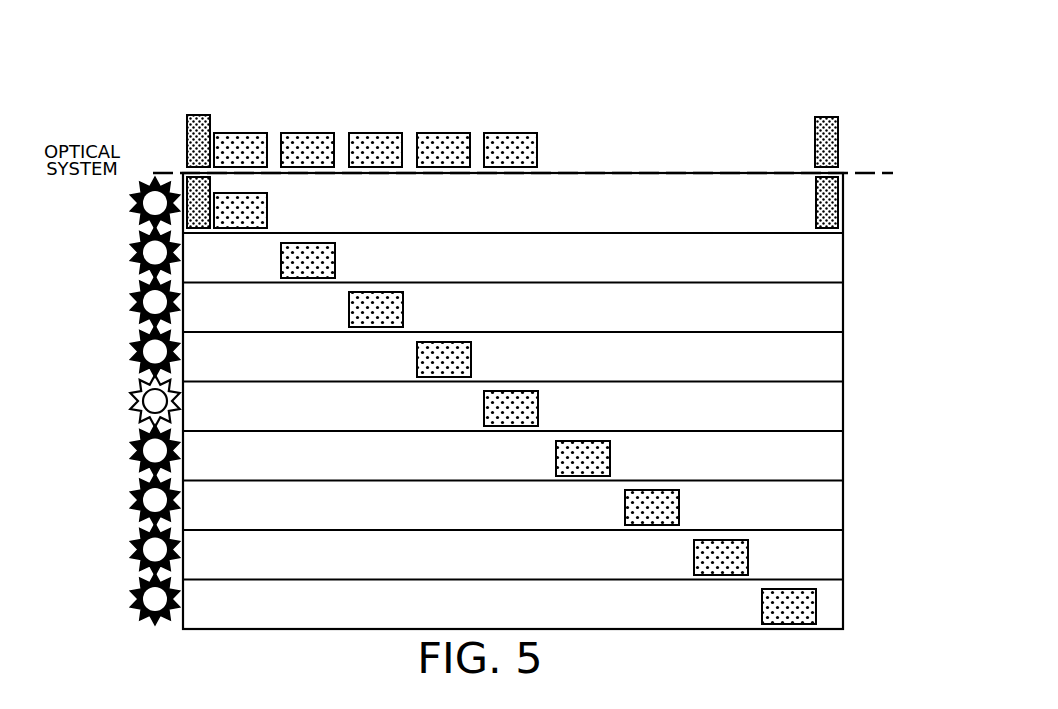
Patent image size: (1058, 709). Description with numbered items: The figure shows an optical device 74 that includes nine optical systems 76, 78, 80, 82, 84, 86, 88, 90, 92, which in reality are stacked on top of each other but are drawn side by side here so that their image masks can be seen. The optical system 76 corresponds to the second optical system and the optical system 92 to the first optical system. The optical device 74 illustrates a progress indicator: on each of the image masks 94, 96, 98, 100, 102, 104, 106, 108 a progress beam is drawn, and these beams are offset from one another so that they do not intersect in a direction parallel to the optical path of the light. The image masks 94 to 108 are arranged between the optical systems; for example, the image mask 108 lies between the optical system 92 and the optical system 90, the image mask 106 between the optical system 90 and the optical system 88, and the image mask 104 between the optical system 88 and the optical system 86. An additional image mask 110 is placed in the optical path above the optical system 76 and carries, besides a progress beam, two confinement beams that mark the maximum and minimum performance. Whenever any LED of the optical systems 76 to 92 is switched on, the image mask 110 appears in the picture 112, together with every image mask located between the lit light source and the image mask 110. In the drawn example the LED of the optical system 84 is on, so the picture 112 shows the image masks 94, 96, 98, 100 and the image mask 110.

The optical device 74 is at (158, 101).
The optical system 76 is at (120, 200).
The optical system 78 is at (120, 250).
The optical system 80 is at (120, 299).
The optical system 82 is at (120, 348).
The optical system 84 is at (120, 398).
The optical system 86 is at (120, 448).
The optical system 88 is at (120, 497).
The optical system 90 is at (120, 546).
The optical system 92 is at (120, 596).
The image mask 94 is at (832, 255).
The image mask 96 is at (832, 304).
The image mask 98 is at (832, 354).
The image mask 100 is at (832, 404).
The image mask 102 is at (832, 453).
The image mask 104 is at (832, 502).
The image mask 106 is at (832, 552).
The image mask 108 is at (832, 602).
The image mask 110 is at (836, 205).
The picture 112 is at (848, 138).